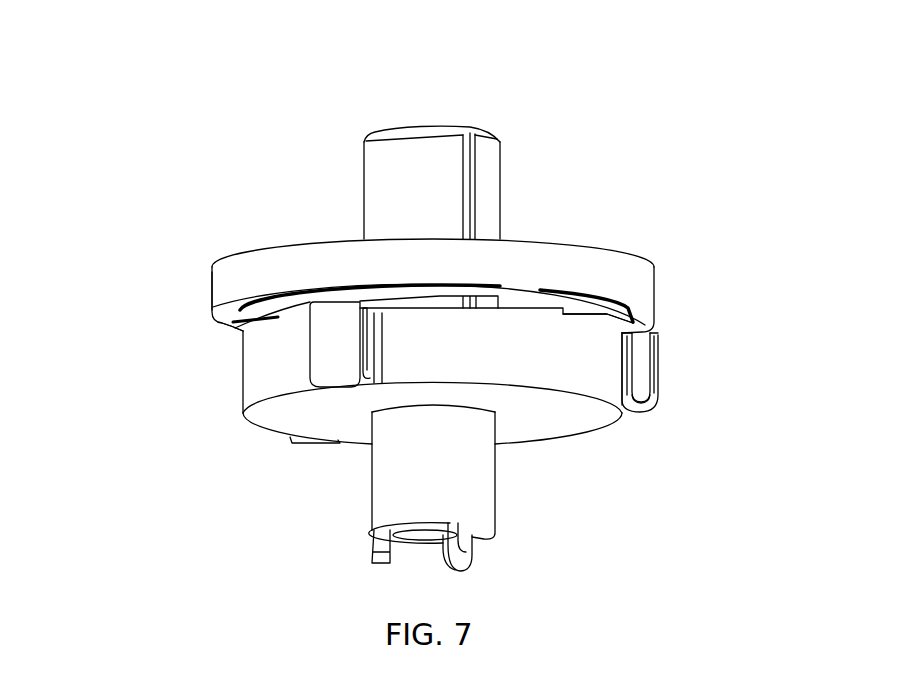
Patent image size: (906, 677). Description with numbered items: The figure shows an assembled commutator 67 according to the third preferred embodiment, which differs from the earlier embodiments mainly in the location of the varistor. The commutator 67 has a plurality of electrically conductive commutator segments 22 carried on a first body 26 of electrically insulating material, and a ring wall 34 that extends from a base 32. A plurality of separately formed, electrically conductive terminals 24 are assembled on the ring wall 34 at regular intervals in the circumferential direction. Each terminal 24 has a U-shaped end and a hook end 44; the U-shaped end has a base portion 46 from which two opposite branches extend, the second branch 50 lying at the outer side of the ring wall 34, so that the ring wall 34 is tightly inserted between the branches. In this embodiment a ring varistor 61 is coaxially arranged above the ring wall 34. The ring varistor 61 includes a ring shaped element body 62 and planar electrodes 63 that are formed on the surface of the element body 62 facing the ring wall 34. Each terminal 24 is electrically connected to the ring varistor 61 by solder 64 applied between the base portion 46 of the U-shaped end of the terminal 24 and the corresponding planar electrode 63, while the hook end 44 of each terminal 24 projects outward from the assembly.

The commutator 67 is at (221, 134).
The first body 26 is at (467, 128).
The commutator segments 22 is at (487, 193).
The ring varistor 61 is at (252, 253).
The ring shaped element body 62 is at (235, 284).
The planar electrodes 63 is at (230, 331).
The solder 64 is at (610, 317).
The base portion 46 is at (628, 330).
The hook end 44 is at (657, 368).
The second branch 50 is at (642, 397).
The ring wall 34 is at (263, 367).
The terminals 24 is at (337, 345).
The base 32 is at (475, 486).